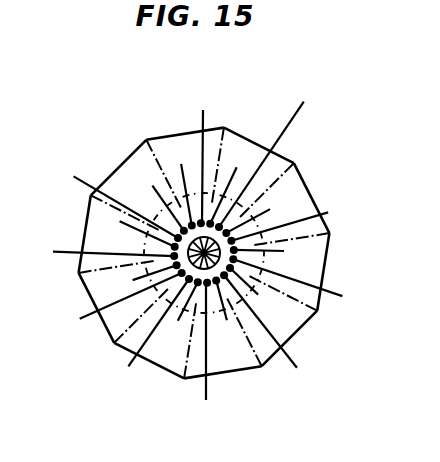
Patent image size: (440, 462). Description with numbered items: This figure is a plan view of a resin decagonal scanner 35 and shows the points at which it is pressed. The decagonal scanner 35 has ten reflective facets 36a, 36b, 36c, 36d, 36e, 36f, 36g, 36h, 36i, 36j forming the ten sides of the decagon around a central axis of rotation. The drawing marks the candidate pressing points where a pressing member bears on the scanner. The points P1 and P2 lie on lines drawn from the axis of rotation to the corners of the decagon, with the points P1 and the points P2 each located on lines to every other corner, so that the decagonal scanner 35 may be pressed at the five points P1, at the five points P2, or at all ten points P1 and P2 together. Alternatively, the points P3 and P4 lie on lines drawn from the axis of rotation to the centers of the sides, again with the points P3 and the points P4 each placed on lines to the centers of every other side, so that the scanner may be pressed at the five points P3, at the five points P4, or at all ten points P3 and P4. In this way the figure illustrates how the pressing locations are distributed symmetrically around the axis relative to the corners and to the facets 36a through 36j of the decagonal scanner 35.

The decagonal scanner 35 is at (168, 72).
The reflective facet 36a is at (253, 143).
The reflective facet 36b is at (301, 185).
The reflective facet 36c is at (324, 261).
The reflective facet 36d is at (305, 323).
The reflective facet 36e is at (242, 372).
The reflective facet 36f is at (154, 366).
The reflective facet 36g is at (88, 292).
The reflective facet 36h is at (86, 217).
The reflective facet 36i is at (130, 156).
The reflective facet 36j is at (165, 137).
The pressing point P1 is at (159, 242).
The pressing point P2 is at (181, 244).
The pressing point P3 is at (237, 252).
The pressing point P4 is at (224, 239).